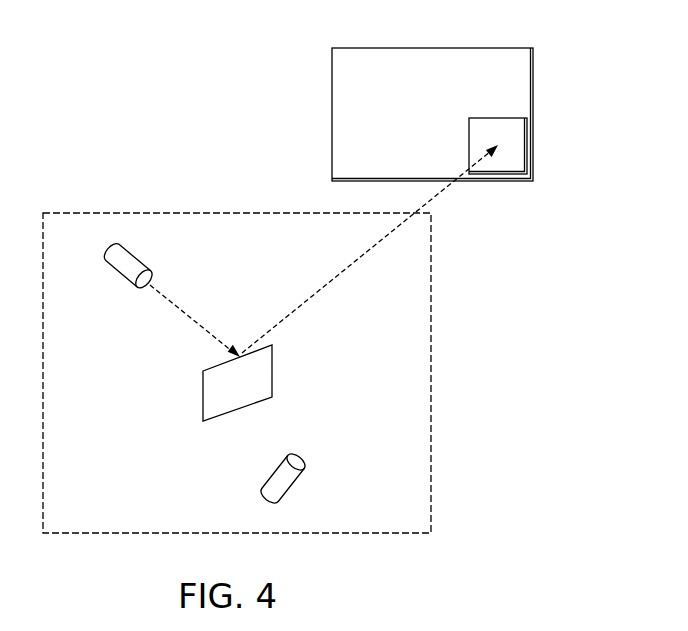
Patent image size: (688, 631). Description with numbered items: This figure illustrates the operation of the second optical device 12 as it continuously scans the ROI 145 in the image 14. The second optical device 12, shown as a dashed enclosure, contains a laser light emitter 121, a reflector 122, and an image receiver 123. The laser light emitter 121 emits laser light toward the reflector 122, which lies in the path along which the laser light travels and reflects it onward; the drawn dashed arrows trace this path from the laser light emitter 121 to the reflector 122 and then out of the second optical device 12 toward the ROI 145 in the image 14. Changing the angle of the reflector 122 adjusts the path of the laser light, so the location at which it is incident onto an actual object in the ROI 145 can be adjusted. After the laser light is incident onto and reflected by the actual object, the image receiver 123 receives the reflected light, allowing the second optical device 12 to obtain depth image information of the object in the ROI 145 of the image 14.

The image 14 is at (372, 48).
The ROI 145 is at (500, 118).
The second optical device 12 is at (431, 293).
The laser light emitter 121 is at (127, 262).
The reflector 122 is at (265, 373).
The image receiver 123 is at (287, 482).